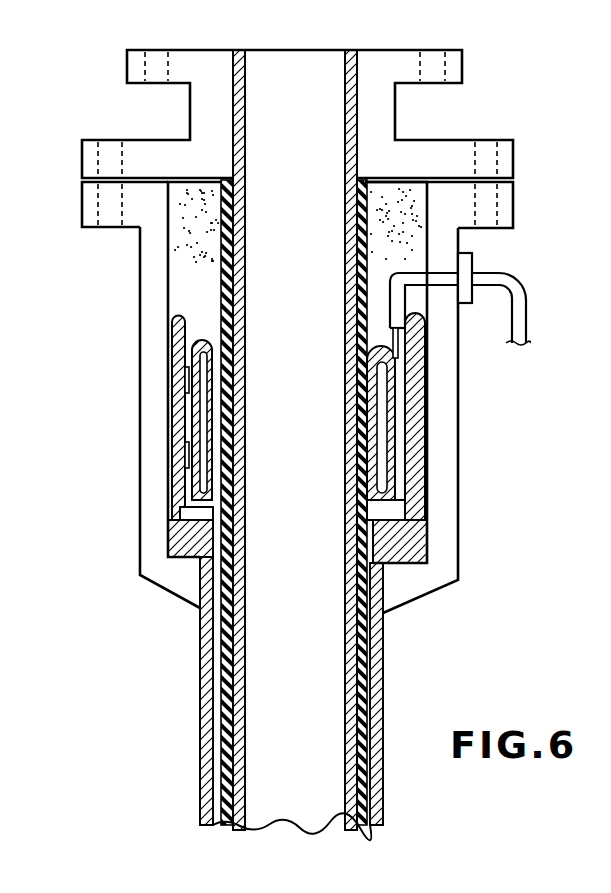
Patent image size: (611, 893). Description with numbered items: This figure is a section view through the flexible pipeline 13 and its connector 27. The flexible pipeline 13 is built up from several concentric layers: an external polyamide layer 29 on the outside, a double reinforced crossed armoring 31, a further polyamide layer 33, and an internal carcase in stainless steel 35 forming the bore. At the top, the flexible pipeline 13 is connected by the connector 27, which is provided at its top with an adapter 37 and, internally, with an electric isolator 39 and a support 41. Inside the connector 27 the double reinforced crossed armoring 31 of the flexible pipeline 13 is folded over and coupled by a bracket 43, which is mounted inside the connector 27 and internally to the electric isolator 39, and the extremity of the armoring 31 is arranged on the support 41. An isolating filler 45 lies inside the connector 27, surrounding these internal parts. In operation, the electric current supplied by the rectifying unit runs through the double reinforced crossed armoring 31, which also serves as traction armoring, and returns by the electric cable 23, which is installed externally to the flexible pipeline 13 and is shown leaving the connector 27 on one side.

The flexible pipeline 13 is at (380, 690).
The electric cable 23 is at (518, 307).
The connector 27 is at (82, 228).
The external polyamide layer 29 is at (207, 655).
The double reinforced crossed armoring 31 is at (217, 696).
The polyamide layer 33 is at (222, 757).
The internal carcase in stainless steel 35 is at (237, 800).
The adapter 37 is at (514, 170).
The electric isolator 39 is at (413, 447).
The support 41 is at (388, 510).
The bracket 43 is at (402, 390).
The isolating filler 45 is at (185, 240).